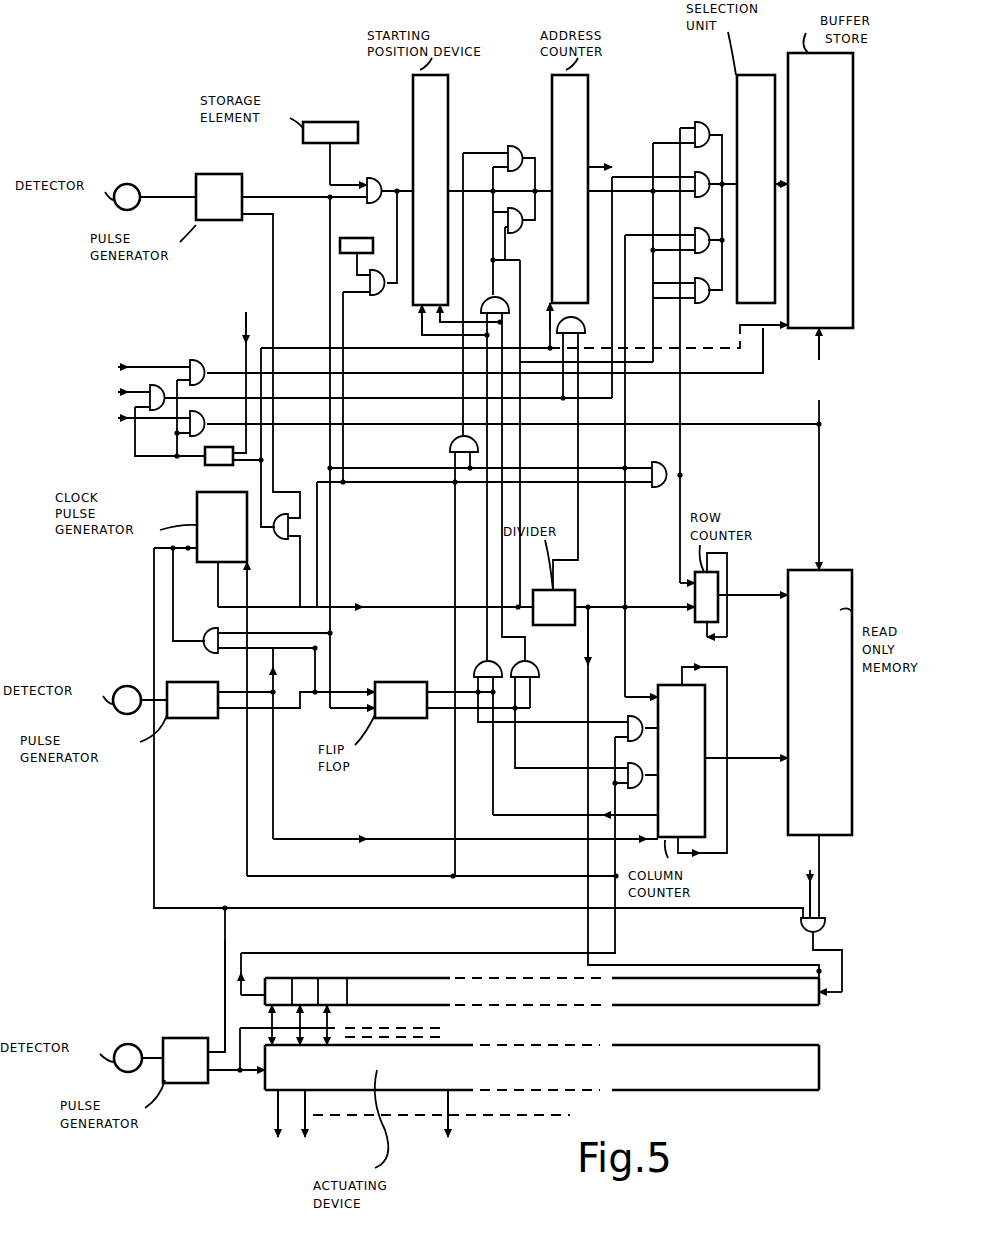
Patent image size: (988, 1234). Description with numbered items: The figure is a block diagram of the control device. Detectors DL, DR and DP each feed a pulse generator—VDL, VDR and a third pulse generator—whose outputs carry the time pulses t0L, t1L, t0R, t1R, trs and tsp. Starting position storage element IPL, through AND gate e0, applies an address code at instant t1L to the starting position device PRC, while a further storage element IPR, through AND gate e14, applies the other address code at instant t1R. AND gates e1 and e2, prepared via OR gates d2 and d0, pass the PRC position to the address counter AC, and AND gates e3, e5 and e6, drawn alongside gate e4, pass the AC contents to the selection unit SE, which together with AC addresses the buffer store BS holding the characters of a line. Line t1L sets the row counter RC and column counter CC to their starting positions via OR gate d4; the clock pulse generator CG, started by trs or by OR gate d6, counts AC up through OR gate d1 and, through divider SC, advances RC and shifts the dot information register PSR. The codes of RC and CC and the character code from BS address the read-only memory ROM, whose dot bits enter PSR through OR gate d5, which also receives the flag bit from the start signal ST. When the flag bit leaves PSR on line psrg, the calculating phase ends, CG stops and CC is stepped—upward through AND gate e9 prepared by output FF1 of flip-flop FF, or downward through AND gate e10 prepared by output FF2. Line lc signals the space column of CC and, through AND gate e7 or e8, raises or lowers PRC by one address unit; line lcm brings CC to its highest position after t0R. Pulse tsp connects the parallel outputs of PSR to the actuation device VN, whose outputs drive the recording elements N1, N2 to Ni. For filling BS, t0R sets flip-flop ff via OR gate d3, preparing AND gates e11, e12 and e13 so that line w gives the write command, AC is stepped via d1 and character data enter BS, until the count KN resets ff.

The detector DL is at (128, 184).
The pulse generator VDL is at (219, 187).
The line t1L is at (286, 185).
The line t0L is at (252, 231).
The starting position storage element IPL is at (330, 119).
The further starting position storage element IPR is at (356, 234).
The starting position device PRC is at (407, 187).
The address counter AC is at (550, 186).
The selection unit SE is at (736, 186).
The buffer store BS is at (799, 189).
The position KN is at (419, 233).
The AND-function gate e0 is at (374, 177).
The AND-function gate e1 is at (513, 148).
The AND-function gate e2 is at (518, 231).
The AND-function gate e3 is at (700, 123).
The AND gate e4 is at (700, 175).
The AND-function gate e5 is at (700, 231).
The AND-function gate e6 is at (700, 281).
The AND-function gate e7 is at (480, 658).
The AND-function gate e8 is at (530, 658).
The AND-function gate e9 is at (621, 718).
The AND-function gate e10 is at (637, 788).
The AND-function gate e11 is at (215, 377).
The AND-function gate e12 is at (161, 389).
The AND-function gate e13 is at (215, 420).
The AND-function gate e14 is at (383, 297).
The OR-function gate d0 is at (485, 291).
The OR-function gate d1 is at (582, 323).
The OR-function gate d2 is at (450, 445).
The OR-function gate d3 is at (270, 538).
The OR-function gate d4 is at (649, 466).
The OR-function gate d5 is at (801, 930).
The OR-function gate d6 is at (201, 629).
The line w is at (751, 350).
The flip-flop ff is at (201, 467).
The clock pulse generator CG is at (197, 512).
The divider SC is at (565, 596).
The row counter RC is at (695, 584).
The character generator ROM is at (798, 785).
The column counter CC is at (677, 744).
The detector DR is at (128, 686).
The pulse generator VDR is at (190, 872).
The line t0R is at (216, 729).
The line t1R is at (246, 741).
The flip-flop FF is at (390, 688).
The flip-flop output FF1 is at (436, 690).
The flip-flop output FF2 is at (430, 712).
The line lc is at (493, 815).
The line lcm is at (368, 863).
The start signal ST is at (808, 882).
The dot information register PSR is at (779, 1007).
The line psrg is at (285, 942).
The trailing edge pulse trs is at (225, 990).
The detector DP is at (129, 1044).
The leading edge pulse tsp is at (225, 1090).
The recording element actuation device VN is at (765, 1076).
The output N1 is at (278, 1127).
The output N2 is at (306, 1127).
The recording element Ni is at (445, 1127).